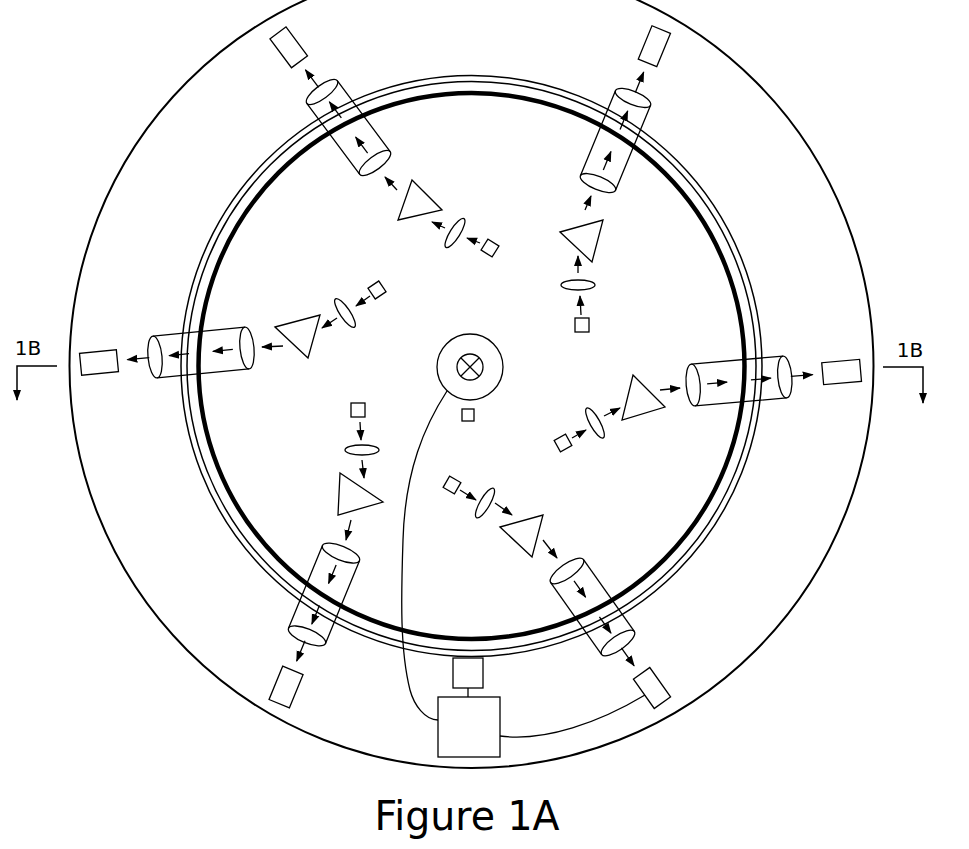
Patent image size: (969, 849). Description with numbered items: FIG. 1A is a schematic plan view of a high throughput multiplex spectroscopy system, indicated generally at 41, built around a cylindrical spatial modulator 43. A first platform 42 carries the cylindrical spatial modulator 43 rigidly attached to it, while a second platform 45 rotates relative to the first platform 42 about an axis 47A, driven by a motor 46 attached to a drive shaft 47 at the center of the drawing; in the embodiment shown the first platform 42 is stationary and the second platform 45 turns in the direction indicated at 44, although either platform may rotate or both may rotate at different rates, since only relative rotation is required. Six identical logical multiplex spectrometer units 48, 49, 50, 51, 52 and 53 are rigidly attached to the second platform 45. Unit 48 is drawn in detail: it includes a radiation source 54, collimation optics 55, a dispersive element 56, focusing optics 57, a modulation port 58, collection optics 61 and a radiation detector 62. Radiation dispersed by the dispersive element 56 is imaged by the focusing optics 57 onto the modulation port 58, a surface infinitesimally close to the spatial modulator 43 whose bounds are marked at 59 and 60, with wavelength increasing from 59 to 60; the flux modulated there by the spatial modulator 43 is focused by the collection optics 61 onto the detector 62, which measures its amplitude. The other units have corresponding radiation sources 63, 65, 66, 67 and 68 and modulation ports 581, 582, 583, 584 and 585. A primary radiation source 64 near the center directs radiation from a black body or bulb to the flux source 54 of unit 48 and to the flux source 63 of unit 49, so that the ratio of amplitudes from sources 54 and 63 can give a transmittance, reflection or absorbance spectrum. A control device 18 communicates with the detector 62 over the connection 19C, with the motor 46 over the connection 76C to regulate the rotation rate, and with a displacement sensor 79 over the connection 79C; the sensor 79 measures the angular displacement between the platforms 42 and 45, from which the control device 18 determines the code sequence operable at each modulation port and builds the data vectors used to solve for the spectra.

The controller 18 is at (469, 727).
The connection line 19C is at (628, 712).
The high throughput multiplex spectroscopy system 41 is at (812, 640).
The first platform 42 is at (752, 440).
The cylindrical spatial modulator 43 is at (717, 495).
The rotation of second platform 44 is at (492, 76).
The second platform 45 is at (740, 183).
The motor 46 is at (505, 361).
The central aperture 47 is at (460, 355).
The axis 47A is at (468, 357).
The logical multiplex spectrometer unit 48 is at (562, 520).
The logical multiplex spectrometer unit 49 is at (655, 378).
The logical multiplex spectrometer unit 50 is at (562, 217).
The logical multiplex spectrometer unit 51 is at (385, 219).
The logical multiplex spectrometer unit 52 is at (293, 311).
The logical multiplex spectrometer unit 53 is at (335, 480).
The radiation source 54 is at (458, 478).
The collimation optics 55 is at (493, 499).
The dispersive element 56 is at (530, 516).
The focusing optics 57 is at (597, 604).
The modulation port 58 is at (608, 595).
The bound of modulation port 59 is at (576, 619).
The bound of modulation port 60 is at (580, 589).
The collection optics 61 is at (605, 625).
The radiation detector 62 is at (660, 672).
The radiation source 63 is at (563, 436).
The primary radiation source 64 is at (480, 408).
The radiation source 65 is at (600, 320).
The radiation source 66 is at (492, 255).
The light source 67 is at (390, 287).
The radiation source 68 is at (360, 400).
The communication link to motor 76C is at (403, 572).
The displacement sensor 79 is at (450, 675).
The communication link 79C is at (485, 690).
The modulation port 581 is at (738, 362).
The modulation port 582 is at (607, 137).
The modulation port 583 is at (357, 125).
The modulation port 584 is at (205, 370).
The modulation port 585 is at (340, 587).